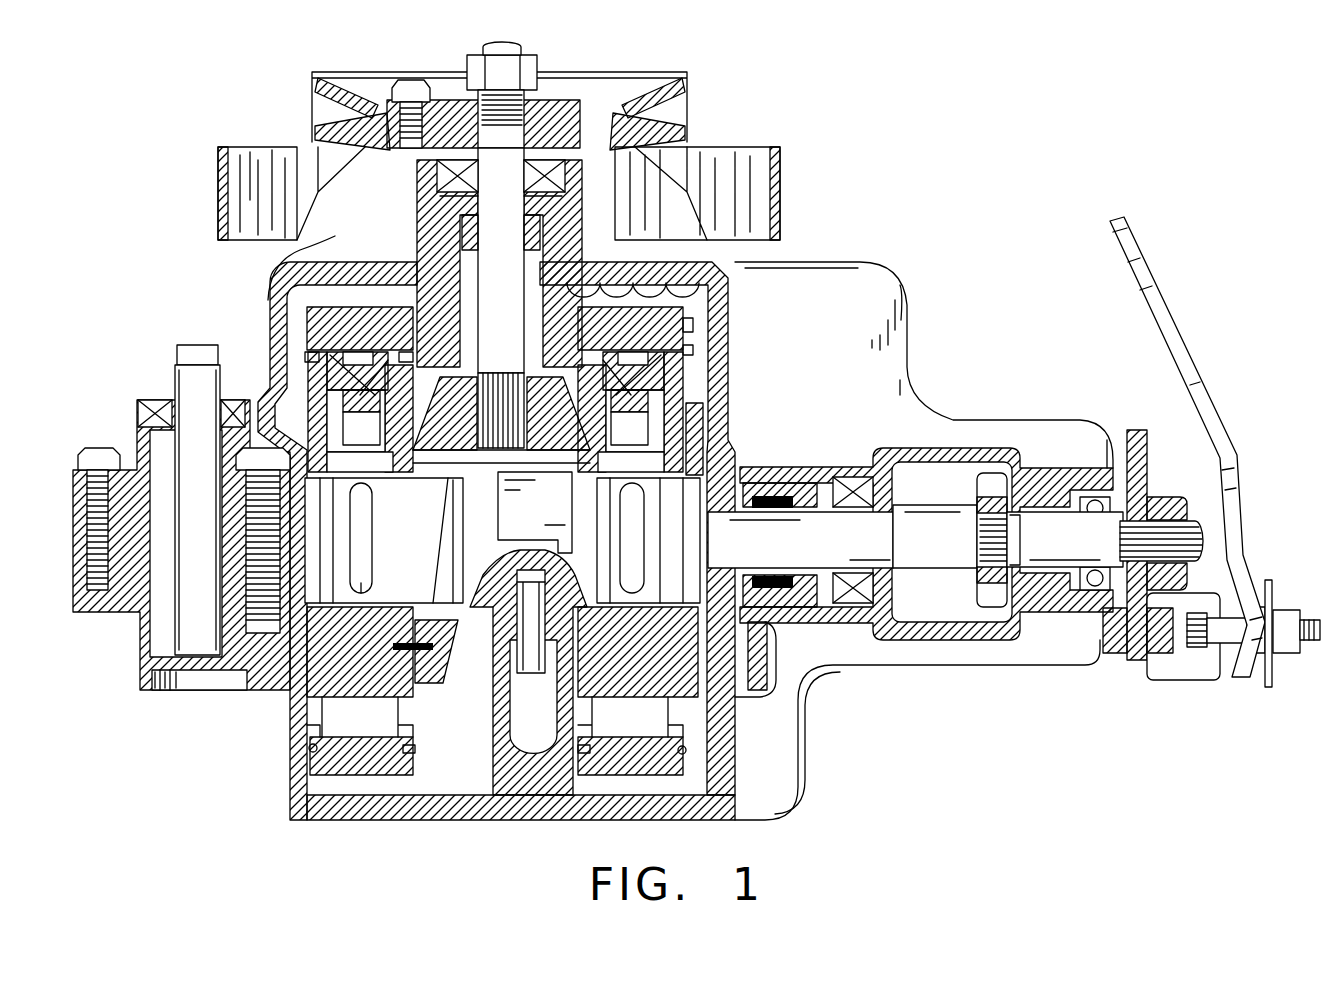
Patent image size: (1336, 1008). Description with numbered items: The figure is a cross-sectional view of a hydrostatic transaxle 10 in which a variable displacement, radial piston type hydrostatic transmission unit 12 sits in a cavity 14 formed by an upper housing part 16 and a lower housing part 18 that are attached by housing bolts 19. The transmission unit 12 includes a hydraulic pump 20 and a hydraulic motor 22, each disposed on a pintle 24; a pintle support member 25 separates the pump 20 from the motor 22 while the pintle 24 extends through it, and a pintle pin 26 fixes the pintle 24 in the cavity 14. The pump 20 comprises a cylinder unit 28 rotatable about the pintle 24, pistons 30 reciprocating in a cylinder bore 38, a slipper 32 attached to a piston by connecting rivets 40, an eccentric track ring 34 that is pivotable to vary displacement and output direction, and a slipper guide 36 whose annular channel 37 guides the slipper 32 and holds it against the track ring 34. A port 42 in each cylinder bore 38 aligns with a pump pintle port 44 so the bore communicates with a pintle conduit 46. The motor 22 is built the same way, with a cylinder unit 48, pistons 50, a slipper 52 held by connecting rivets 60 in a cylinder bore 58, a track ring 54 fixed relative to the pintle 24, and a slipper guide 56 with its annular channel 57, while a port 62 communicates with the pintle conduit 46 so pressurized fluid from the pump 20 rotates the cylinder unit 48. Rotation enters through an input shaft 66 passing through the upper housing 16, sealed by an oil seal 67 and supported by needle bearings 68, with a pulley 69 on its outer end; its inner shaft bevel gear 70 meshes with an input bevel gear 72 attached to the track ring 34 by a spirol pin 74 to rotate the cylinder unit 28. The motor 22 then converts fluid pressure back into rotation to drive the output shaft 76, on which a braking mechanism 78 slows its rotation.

The hydrostatic transaxle 10 is at (1005, 218).
The hydrostatic transmission unit 12 is at (218, 329).
The cavity 14 is at (708, 298).
The upper housing part 16 is at (893, 338).
The lower housing part 18 is at (868, 658).
The housing bolts 19 is at (100, 452).
The hydraulic pump 20 is at (362, 306).
The hydraulic motor 22 is at (640, 292).
The pintle 24 is at (685, 500).
The pintle support member 25 is at (550, 510).
The pintle pin 26 is at (526, 640).
The cylinder unit 28 is at (334, 657).
The pistons 30 is at (332, 440).
The slipper 32 is at (307, 350).
The track ring 34 is at (343, 339).
The slipper guide 36 is at (300, 319).
The annular channel 37 is at (307, 748).
The cylinder bore 38 is at (330, 432).
The connecting rivets 40 is at (333, 415).
The port 42 is at (384, 540).
The pump pintle port 44 is at (362, 578).
The pintle conduit 46 is at (365, 540).
The cylinder unit 48 is at (619, 667).
The pistons 50 is at (655, 415).
The slipper 52 is at (670, 372).
The track ring 54 is at (617, 339).
The slipper guide 56 is at (693, 332).
The annular channel 57 is at (690, 735).
The cylinder bore 58 is at (666, 420).
The connecting rivets 60 is at (650, 395).
The port 62 is at (697, 452).
The input shaft 66 is at (486, 294).
The oil seal 67 is at (565, 178).
The needle bearings 68 is at (463, 232).
The pulley 69 is at (652, 71).
The shaft bevel gear 70 is at (414, 300).
The input bevel gear 72 is at (450, 667).
The spirol pin 74 is at (423, 652).
The output shaft 76 is at (795, 555).
The braking mechanism 78 is at (1133, 670).